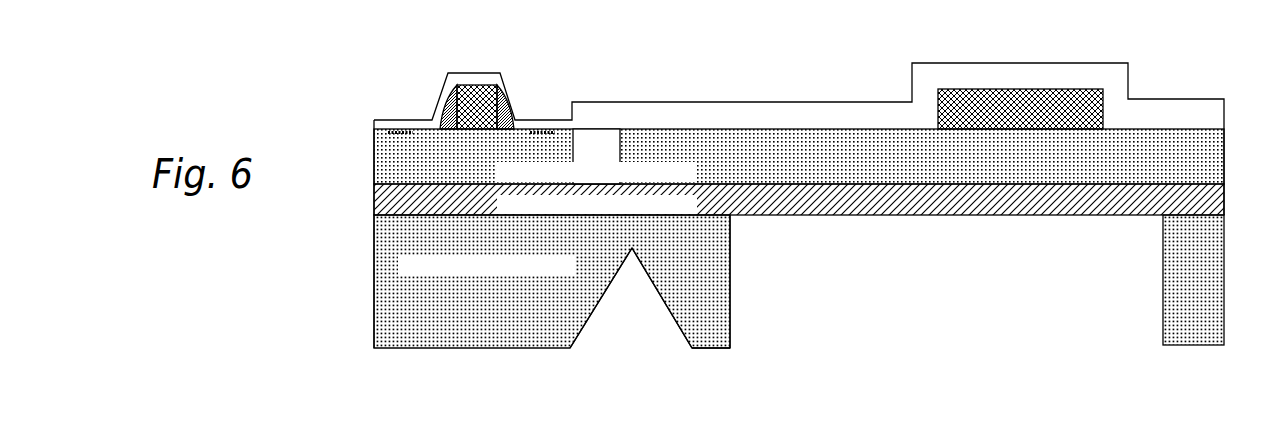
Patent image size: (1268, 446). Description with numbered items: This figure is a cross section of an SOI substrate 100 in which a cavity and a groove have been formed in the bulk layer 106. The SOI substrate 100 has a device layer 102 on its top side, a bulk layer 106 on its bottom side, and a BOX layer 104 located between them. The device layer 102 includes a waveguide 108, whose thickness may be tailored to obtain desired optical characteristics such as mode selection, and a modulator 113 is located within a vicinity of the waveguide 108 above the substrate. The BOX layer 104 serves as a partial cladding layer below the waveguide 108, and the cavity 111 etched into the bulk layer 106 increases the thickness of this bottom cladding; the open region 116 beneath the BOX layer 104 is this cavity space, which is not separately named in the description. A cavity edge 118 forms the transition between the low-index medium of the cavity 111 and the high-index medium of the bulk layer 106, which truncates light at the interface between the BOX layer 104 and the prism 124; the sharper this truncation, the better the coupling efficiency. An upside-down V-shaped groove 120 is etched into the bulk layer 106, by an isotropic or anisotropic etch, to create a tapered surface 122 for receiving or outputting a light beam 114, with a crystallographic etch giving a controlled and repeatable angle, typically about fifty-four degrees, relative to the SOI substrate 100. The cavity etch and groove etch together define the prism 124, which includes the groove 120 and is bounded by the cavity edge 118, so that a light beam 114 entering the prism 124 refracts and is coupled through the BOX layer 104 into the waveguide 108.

The SOI substrate 100 is at (360, 117).
The device layer 102 is at (690, 180).
The BOX layer 104 is at (690, 213).
The bulk layer 106 is at (570, 275).
The waveguide 108 is at (909, 143).
The cavity 111 is at (553, 60).
The modulator 113 is at (1013, 89).
The light beam 114 is at (853, 117).
The cavity in bulk layer 116 is at (978, 314).
The cavity edge 118 is at (734, 264).
The groove 120 is at (625, 329).
The tapered surface 122 is at (663, 318).
The prism 124 is at (713, 307).